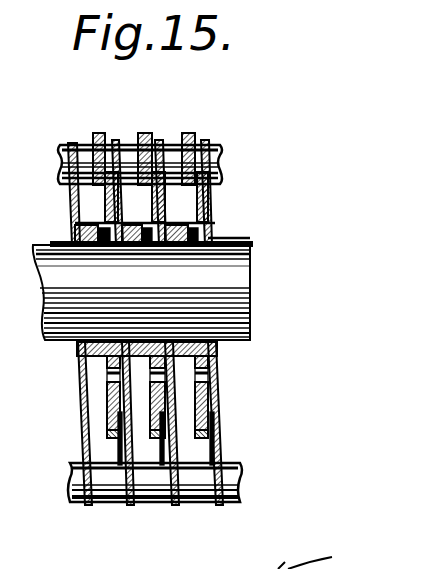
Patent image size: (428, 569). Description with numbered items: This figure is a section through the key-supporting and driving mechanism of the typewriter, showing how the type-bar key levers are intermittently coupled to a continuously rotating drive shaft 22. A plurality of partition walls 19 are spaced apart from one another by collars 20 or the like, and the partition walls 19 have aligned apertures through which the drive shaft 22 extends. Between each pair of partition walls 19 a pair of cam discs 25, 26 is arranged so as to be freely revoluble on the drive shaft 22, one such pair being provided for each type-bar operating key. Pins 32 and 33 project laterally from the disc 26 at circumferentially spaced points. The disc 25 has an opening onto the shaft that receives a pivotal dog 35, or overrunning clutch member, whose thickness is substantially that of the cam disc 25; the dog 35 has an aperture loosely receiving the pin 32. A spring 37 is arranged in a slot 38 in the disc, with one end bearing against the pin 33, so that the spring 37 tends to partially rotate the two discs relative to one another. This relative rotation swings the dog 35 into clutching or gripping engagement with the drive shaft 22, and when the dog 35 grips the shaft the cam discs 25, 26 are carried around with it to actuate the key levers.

The partition walls 19 is at (162, 140).
The collars 20 is at (107, 351).
The drive shaft 22 is at (50, 288).
The cam disc 25 is at (99, 133).
The cam disc 26 is at (150, 392).
The pin 32 is at (110, 376).
The pin 33 is at (140, 224).
The pivotal dog 35 is at (153, 420).
The spring 37 is at (150, 186).
The slot 38 is at (187, 246).